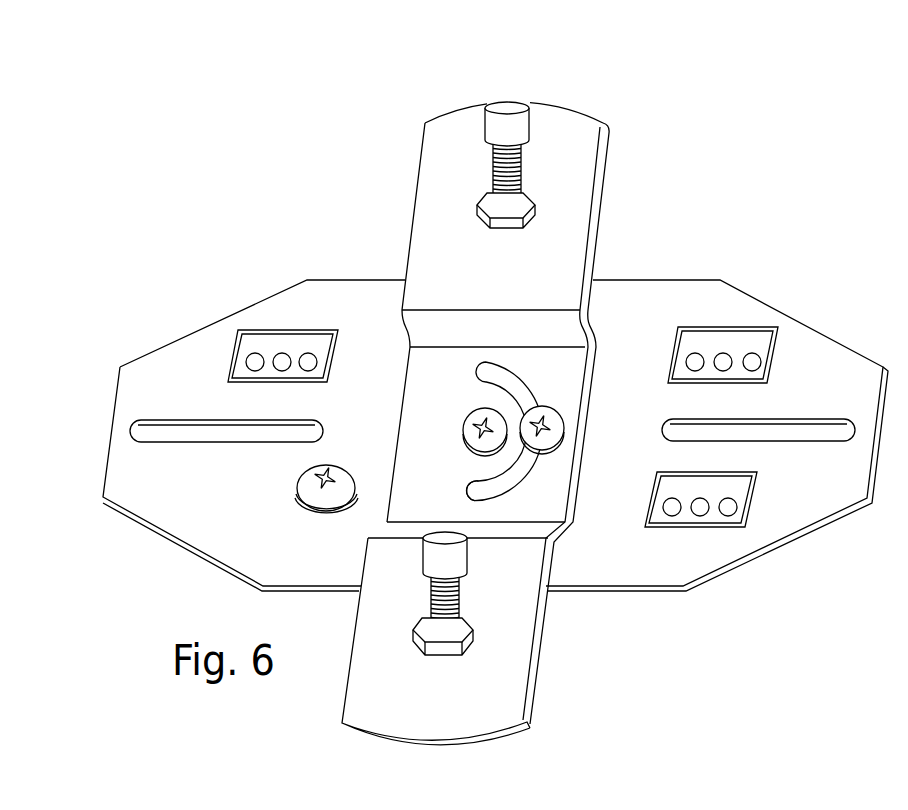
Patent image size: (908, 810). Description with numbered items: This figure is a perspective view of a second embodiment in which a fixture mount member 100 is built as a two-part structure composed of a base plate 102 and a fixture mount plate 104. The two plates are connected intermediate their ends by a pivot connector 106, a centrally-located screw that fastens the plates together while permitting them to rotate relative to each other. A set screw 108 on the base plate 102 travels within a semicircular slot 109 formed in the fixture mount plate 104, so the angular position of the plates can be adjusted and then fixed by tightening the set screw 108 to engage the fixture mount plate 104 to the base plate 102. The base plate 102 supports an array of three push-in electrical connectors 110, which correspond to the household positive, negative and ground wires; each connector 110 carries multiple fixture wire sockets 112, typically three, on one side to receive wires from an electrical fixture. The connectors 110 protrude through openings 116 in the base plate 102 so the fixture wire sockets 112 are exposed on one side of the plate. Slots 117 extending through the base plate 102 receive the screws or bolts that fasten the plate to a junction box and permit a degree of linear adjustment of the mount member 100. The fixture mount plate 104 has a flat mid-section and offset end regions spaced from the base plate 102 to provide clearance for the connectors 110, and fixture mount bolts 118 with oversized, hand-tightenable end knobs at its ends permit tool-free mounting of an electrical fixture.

The fixture mount member 100 is at (703, 137).
The base plate 102 is at (647, 302).
The fixture mount plate 104 is at (580, 230).
The pivot connector 106 is at (475, 438).
The set screw 108 is at (552, 430).
The semicircular slot 109 is at (527, 480).
The electrical connector 110 is at (247, 343).
The fixture wire socket 112 is at (285, 352).
The opening 116 is at (280, 383).
The slot 117 is at (188, 430).
The fixture mount bolt 118 is at (523, 160).